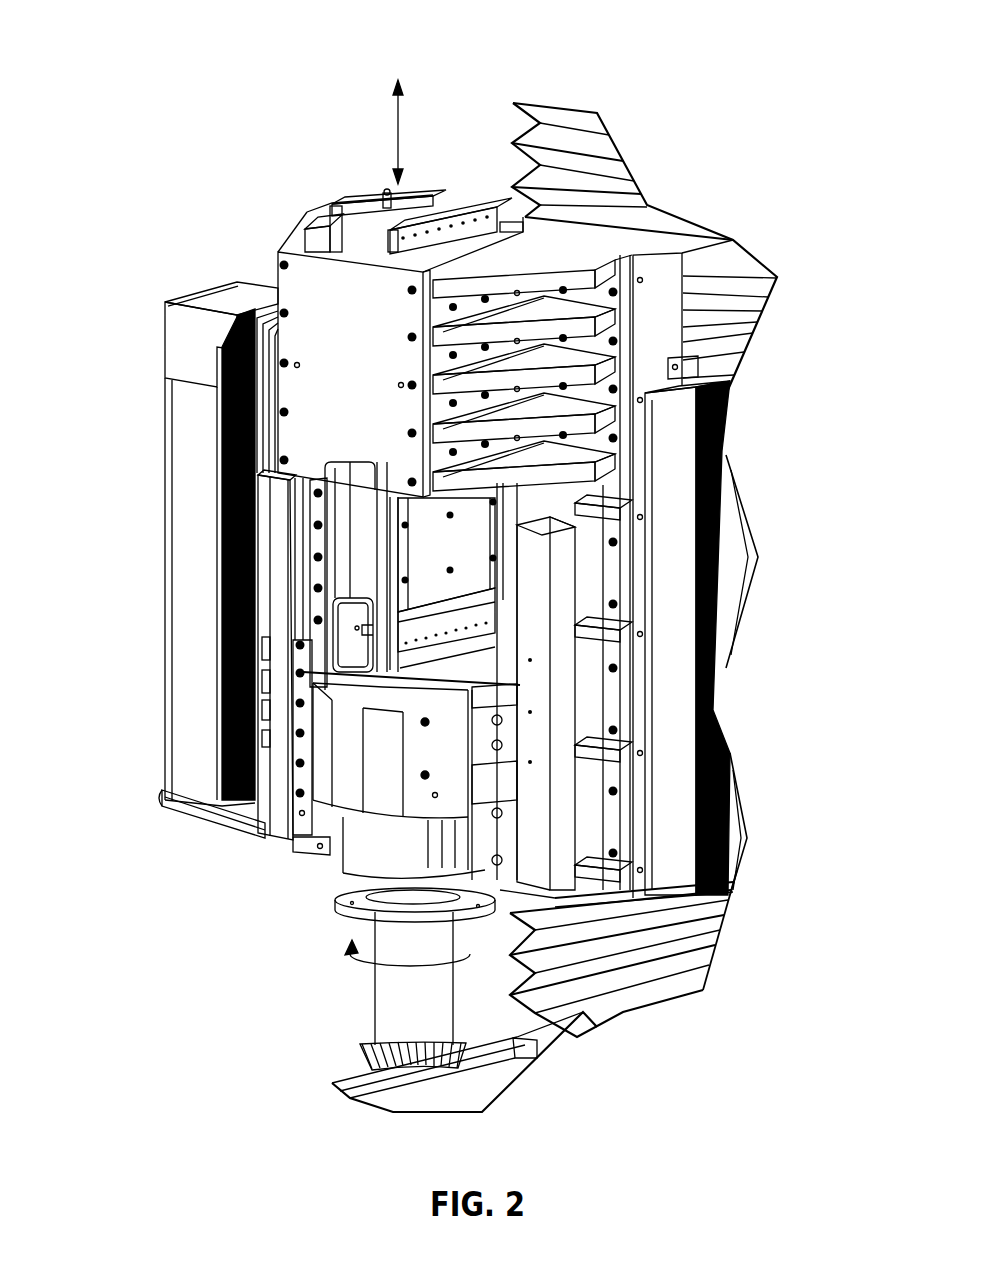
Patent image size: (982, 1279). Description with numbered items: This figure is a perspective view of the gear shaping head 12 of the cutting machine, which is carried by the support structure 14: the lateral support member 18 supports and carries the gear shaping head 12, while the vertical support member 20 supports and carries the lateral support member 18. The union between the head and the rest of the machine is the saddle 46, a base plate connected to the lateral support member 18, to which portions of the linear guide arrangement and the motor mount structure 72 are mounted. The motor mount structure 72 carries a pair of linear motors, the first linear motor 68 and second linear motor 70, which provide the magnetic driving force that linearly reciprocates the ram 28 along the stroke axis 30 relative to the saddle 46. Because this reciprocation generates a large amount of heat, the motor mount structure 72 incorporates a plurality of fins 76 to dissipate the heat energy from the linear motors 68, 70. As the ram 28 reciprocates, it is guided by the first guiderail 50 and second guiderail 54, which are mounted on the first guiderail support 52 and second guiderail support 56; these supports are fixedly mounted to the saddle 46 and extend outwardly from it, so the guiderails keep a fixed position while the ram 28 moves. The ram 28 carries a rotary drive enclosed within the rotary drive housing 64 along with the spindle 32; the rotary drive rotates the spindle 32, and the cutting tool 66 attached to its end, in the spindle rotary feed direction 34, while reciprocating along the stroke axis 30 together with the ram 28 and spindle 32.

The gear shaping head 12 is at (190, 164).
The support structure 14 is at (372, 1087).
The lateral support member 18 is at (180, 347).
The vertical support member 20 is at (560, 140).
The ram 28 is at (222, 660).
The stroke axis 30 is at (399, 108).
The spindle 32 is at (410, 1000).
The spindle rotary feed direction 34 is at (410, 965).
The saddle 46 is at (663, 278).
The first guiderail 50 is at (315, 510).
The first guiderail support 52 is at (267, 533).
The second guiderail 54 is at (505, 597).
The second guiderail support 56 is at (562, 665).
The rotary drive housing 64 is at (348, 768).
The cutting tool 66 is at (365, 1052).
The first linear motor 68 is at (312, 243).
The second linear motor 70 is at (512, 240).
The motor mount structure 72 is at (567, 264).
The fins 76 is at (612, 322).